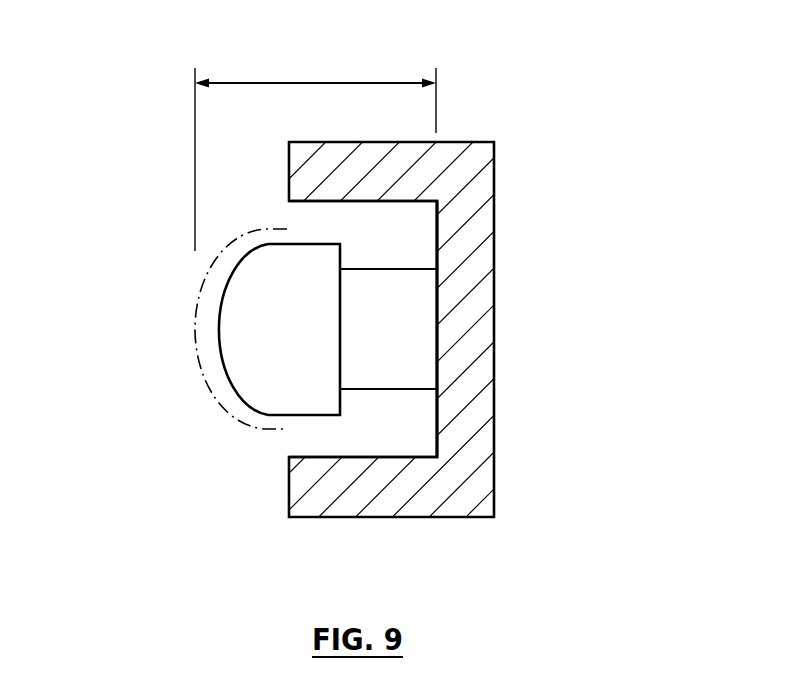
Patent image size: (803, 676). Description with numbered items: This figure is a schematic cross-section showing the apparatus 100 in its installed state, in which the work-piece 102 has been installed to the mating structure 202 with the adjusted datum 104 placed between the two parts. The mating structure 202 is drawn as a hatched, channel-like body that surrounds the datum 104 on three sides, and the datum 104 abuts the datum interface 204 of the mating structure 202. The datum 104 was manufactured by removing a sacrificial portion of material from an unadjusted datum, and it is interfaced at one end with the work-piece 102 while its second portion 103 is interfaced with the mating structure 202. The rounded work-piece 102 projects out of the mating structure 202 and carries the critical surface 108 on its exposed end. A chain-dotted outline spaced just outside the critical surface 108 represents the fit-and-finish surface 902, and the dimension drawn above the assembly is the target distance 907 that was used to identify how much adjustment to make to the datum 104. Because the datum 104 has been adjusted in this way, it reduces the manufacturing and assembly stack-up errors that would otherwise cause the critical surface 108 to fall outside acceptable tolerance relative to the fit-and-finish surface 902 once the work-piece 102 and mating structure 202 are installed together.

The apparatus 100 is at (401, 338).
The work-piece 102 is at (206, 355).
The second portion 103 is at (437, 305).
The datum 104 is at (405, 390).
The critical surface 108 is at (213, 350).
The mating structure 202 is at (494, 254).
The datum interface 204 is at (437, 433).
The fit-and-finish surface 902 is at (197, 323).
The target distance 907 is at (313, 82).